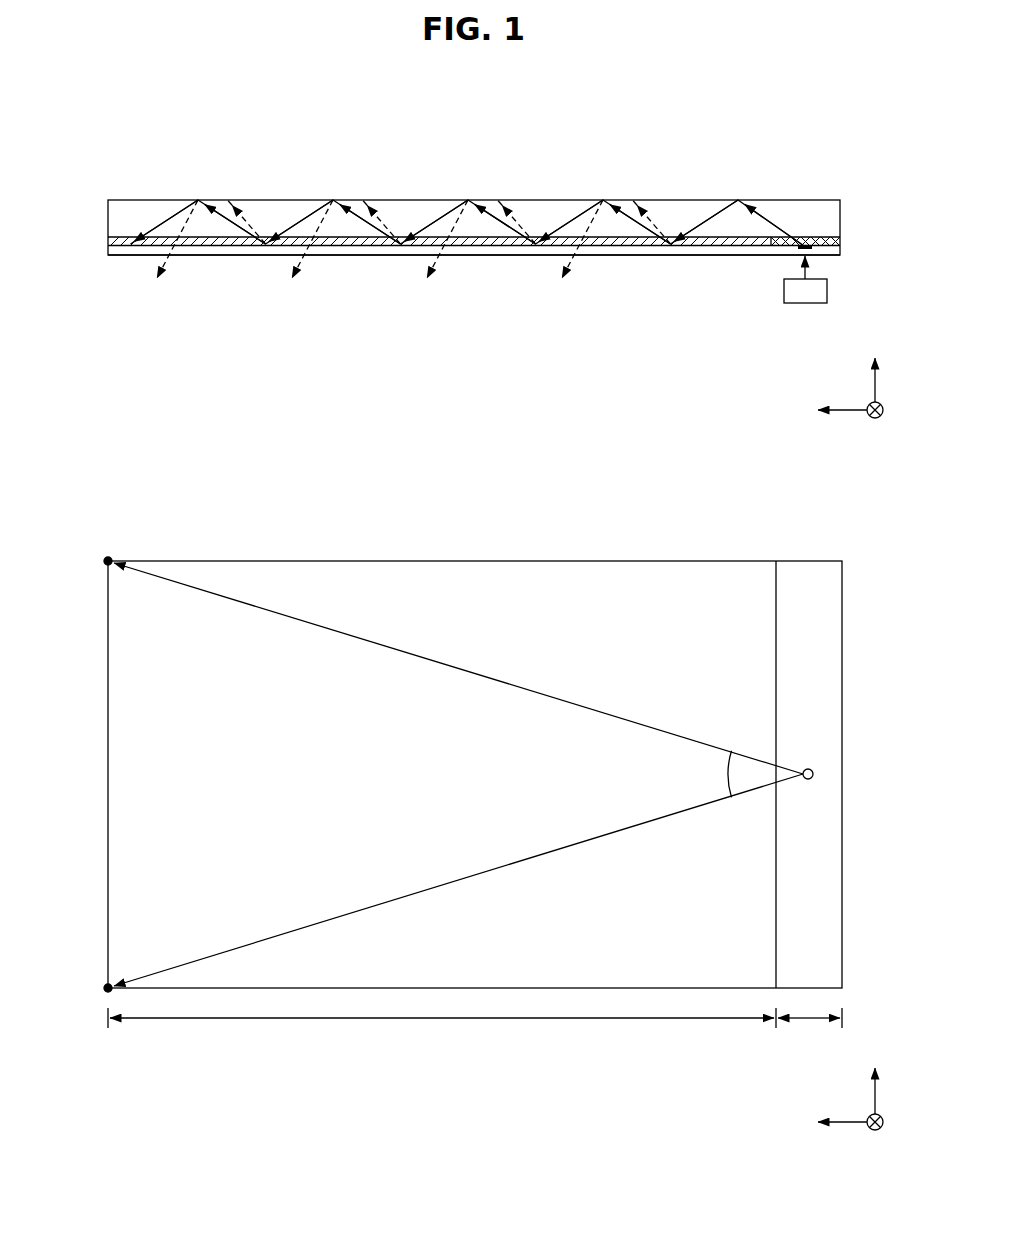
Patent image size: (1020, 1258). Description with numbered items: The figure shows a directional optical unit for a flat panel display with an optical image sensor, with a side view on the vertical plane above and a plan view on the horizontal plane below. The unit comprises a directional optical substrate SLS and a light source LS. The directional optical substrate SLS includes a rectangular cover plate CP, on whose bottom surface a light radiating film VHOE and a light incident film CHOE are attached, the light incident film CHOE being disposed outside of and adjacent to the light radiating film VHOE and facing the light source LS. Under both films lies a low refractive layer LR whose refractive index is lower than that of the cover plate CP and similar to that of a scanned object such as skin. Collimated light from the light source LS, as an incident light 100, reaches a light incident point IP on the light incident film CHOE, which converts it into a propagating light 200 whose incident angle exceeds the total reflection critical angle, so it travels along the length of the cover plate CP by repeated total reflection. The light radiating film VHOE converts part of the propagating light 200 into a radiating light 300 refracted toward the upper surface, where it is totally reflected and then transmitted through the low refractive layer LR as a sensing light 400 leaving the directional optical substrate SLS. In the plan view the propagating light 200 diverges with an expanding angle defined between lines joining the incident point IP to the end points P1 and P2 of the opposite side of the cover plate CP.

The incident light 100 is at (799, 280).
The propagating light 200 is at (710, 217).
The radiating light 300 is at (648, 220).
The sensing light 400 is at (578, 255).
The directional optical substrate SLS is at (480, 116).
The cover plate CP is at (115, 217).
The light radiating film VHOE is at (115, 240).
The light incident film CHOE is at (843, 240).
The low refractive layer LR is at (115, 249).
The light source LS is at (822, 293).
The light incident point IP is at (817, 248).
The end point P1 is at (108, 556).
The end point P2 is at (104, 990).